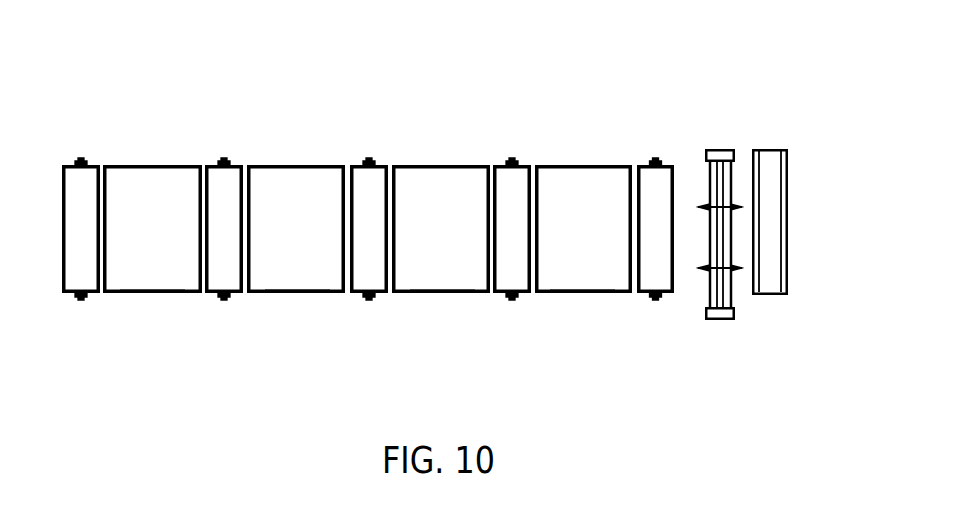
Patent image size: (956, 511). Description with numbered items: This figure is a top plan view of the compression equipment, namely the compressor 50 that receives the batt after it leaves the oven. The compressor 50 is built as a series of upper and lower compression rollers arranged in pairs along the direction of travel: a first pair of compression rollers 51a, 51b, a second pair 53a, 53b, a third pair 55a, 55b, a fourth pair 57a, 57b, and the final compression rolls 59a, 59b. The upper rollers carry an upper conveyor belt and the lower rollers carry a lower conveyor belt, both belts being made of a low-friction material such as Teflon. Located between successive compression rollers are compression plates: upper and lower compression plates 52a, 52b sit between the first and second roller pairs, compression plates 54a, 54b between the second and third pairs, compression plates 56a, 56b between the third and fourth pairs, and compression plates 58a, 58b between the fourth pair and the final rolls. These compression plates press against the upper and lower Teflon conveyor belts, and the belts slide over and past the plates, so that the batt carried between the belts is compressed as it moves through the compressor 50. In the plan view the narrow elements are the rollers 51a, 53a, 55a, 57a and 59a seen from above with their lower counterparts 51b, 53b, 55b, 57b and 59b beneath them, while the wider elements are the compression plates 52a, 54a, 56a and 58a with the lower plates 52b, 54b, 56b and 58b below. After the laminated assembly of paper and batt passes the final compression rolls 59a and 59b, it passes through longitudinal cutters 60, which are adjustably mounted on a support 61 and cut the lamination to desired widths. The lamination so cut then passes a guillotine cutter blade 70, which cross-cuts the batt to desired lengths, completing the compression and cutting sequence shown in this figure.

The compressor 50 is at (573, 58).
The upper compression roller 51a is at (73, 175).
The lower compression roller 51b is at (72, 287).
The upper compression plate 52a is at (168, 243).
The lower compression plate 52b is at (158, 287).
The upper compression roller 53a is at (218, 175).
The lower compression roller 53b is at (212, 287).
The upper compression plate 54a is at (318, 243).
The lower compression plate 54b is at (300, 287).
The upper compression roller 55a is at (362, 178).
The lower compression roller 55b is at (360, 287).
The upper compression plate 56a is at (455, 243).
The lower compression plate 56b is at (438, 287).
The upper compression roller 57a is at (505, 178).
The lower compression roller 57b is at (502, 287).
The upper compression plate 58a is at (610, 243).
The lower compression plate 58b is at (585, 287).
The final upper compression roll 59a is at (647, 178).
The final lower compression roll 59b is at (645, 287).
The longitudinal cutters 60 is at (705, 206).
The support 61 is at (722, 150).
The guillotine cutter blade 70 is at (769, 158).